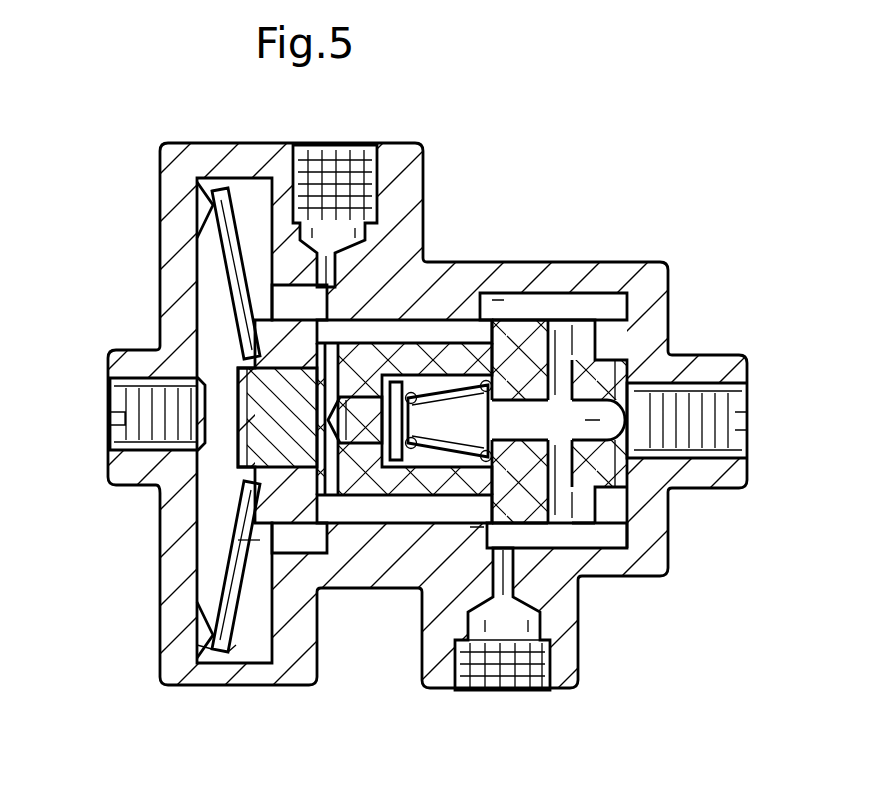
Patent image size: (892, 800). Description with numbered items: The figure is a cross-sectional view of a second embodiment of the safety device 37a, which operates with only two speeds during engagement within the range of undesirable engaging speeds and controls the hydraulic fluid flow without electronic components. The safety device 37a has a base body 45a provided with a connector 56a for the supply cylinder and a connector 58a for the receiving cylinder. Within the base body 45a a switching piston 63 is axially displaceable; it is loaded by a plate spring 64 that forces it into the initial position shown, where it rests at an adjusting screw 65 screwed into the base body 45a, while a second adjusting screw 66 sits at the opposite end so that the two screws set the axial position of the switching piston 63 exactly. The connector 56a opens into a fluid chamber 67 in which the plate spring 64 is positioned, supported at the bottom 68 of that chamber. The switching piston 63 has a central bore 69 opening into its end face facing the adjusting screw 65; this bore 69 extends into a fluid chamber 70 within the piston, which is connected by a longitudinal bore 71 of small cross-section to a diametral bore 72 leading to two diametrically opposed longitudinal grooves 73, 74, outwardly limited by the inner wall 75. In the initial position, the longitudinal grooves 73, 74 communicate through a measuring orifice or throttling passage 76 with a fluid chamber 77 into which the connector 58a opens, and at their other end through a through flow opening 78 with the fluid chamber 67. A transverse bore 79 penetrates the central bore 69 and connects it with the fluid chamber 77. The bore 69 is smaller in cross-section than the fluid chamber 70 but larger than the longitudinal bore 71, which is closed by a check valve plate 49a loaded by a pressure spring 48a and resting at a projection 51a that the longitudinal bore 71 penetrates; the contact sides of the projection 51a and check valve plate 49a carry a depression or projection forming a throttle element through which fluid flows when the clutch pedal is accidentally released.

The safety device 37a is at (552, 111).
The base body 45a is at (258, 158).
The pressure spring 48a is at (381, 377).
The check valve plate 49a is at (388, 453).
The projection 51a is at (258, 350).
The connector 56a is at (352, 165).
The connector 58a is at (522, 683).
The switching piston 63 is at (656, 292).
The plate spring 64 is at (238, 539).
The adjusting screw 65 is at (712, 403).
The second adjusting screw 66 is at (112, 392).
The fluid chamber 67 is at (249, 630).
The bottom of the fluid chamber 68 is at (177, 329).
The central bore 69 is at (656, 497).
The fluid chamber 70 is at (602, 350).
The longitudinal bore 71 is at (352, 425).
The diametral bore 72 is at (243, 437).
The longitudinal groove 73 is at (374, 331).
The longitudinal groove 74 is at (416, 510).
The inner wall 75 is at (461, 322).
The measuring orifice/throttling passage 76 is at (498, 300).
The fluid chamber 77 is at (568, 540).
The through flow opening 78 is at (223, 277).
The transverse bore 79 is at (626, 382).